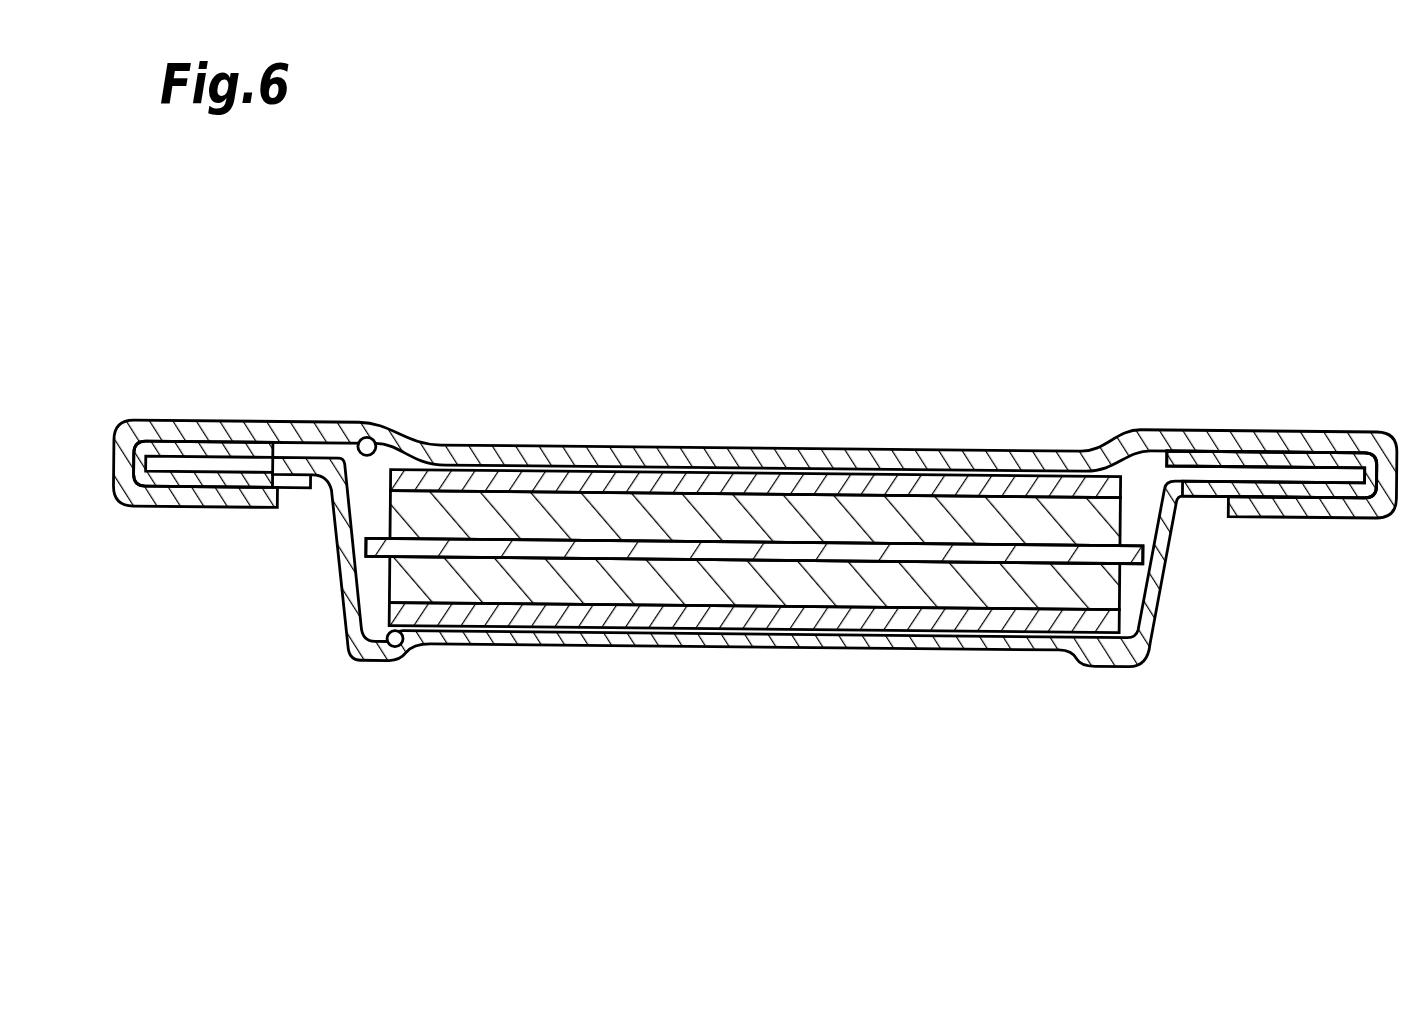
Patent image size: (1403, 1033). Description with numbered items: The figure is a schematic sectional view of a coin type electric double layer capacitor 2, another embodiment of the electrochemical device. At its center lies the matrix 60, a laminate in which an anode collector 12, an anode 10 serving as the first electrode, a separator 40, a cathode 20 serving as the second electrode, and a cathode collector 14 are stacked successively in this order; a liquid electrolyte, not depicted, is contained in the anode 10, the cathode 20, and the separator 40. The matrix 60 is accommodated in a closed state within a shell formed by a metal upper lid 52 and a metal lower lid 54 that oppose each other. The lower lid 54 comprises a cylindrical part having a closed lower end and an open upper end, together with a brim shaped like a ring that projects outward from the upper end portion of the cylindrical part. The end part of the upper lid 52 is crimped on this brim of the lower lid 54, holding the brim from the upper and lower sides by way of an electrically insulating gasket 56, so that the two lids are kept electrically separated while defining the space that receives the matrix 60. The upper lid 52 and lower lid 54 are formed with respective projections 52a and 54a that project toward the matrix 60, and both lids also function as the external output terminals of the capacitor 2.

The coin type electric double layer capacitor 2 is at (1081, 340).
The anode 10 is at (1100, 517).
The anode collector 12 is at (1100, 482).
The cathode collector 14 is at (1100, 617).
The cathode 20 is at (1100, 583).
The separator 40 is at (1135, 552).
The upper lid 52 is at (547, 457).
The projection 52a is at (362, 445).
The lower lid 54 is at (547, 648).
The projection 54a is at (391, 664).
The insulating gasket 56 is at (243, 455).
The matrix 60 is at (867, 607).